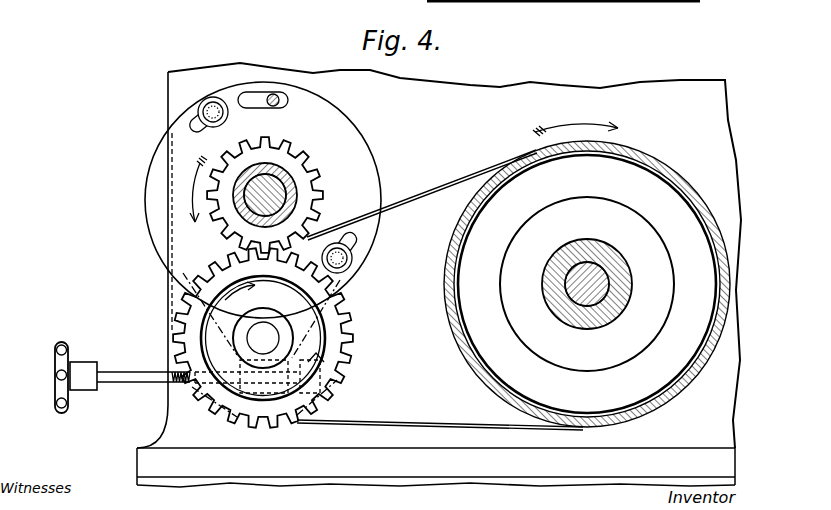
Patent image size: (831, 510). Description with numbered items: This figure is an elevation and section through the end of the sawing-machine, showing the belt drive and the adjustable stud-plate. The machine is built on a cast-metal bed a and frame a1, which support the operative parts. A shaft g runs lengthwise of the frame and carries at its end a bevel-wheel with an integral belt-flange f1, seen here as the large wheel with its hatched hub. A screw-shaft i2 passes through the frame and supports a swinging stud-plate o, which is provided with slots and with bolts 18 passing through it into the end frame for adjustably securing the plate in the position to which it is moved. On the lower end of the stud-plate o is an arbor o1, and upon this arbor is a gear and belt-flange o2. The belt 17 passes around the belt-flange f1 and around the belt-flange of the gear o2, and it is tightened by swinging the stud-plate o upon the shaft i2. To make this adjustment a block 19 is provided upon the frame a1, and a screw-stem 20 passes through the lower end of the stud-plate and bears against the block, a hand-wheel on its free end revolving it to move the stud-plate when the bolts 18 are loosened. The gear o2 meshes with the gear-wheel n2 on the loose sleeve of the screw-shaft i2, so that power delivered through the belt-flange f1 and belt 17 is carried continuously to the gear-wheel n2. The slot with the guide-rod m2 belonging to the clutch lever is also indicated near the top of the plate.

The belt 17 is at (443, 180).
The bolts 18 is at (211, 100).
The block 19 is at (328, 372).
The screw-stem 20 is at (144, 378).
The bed a is at (390, 478).
The frame a1 is at (439, 255).
The belt-flange f1 is at (458, 262).
The shaft g is at (586, 298).
The screw-shaft i2 is at (276, 182).
The guide-rod m2 is at (273, 96).
The gear-wheel n2 is at (314, 189).
The stud-plate o is at (355, 150).
The arbor o1 is at (264, 336).
The gear and belt-flange o2 is at (345, 358).